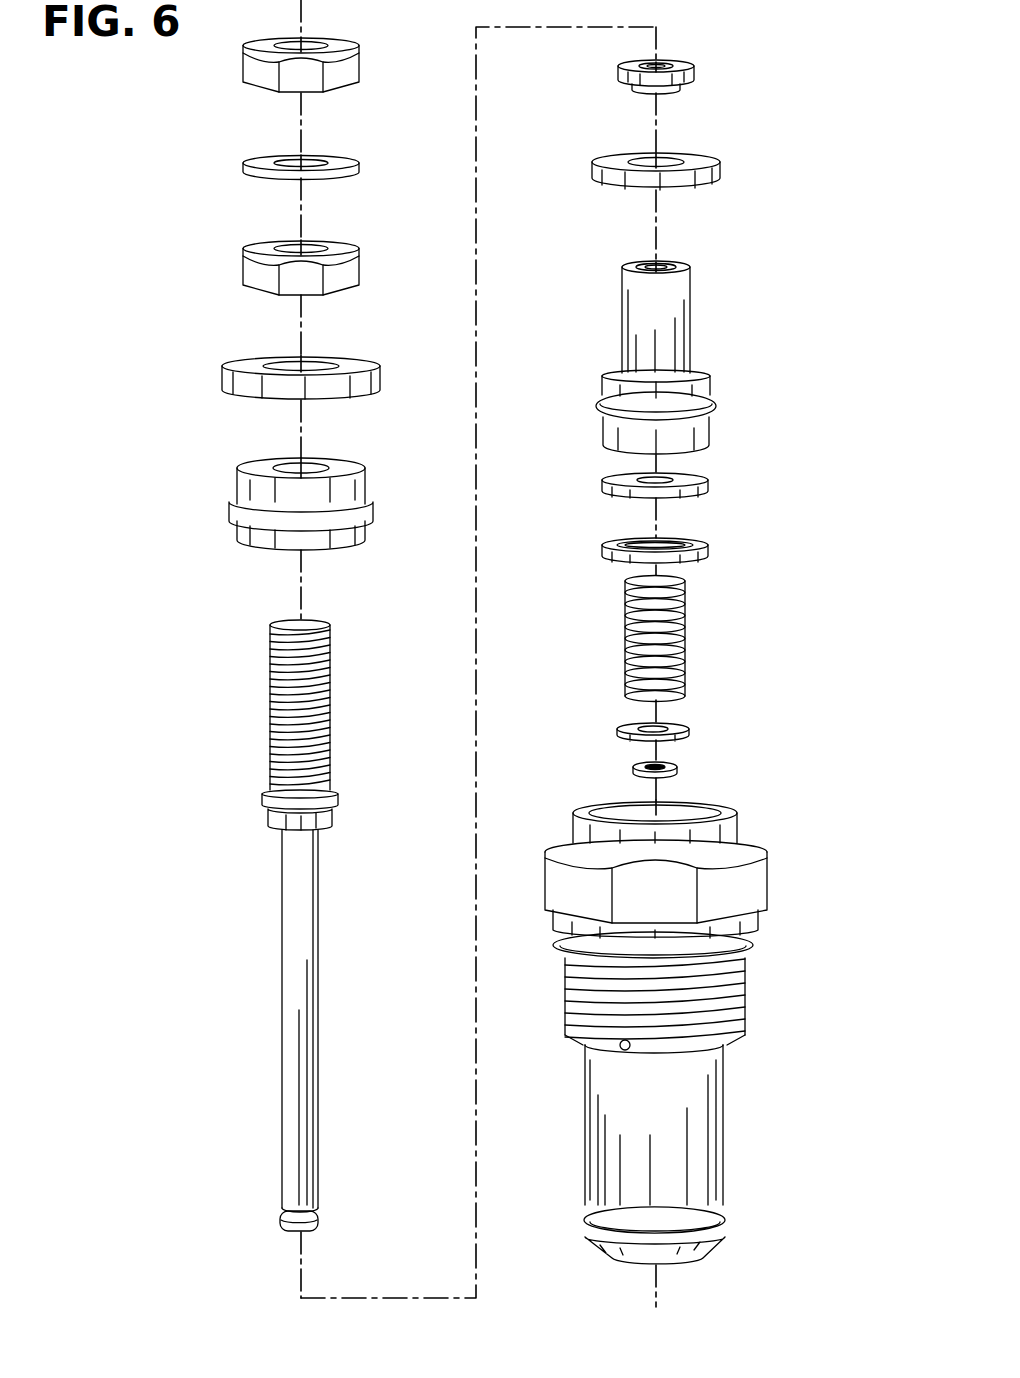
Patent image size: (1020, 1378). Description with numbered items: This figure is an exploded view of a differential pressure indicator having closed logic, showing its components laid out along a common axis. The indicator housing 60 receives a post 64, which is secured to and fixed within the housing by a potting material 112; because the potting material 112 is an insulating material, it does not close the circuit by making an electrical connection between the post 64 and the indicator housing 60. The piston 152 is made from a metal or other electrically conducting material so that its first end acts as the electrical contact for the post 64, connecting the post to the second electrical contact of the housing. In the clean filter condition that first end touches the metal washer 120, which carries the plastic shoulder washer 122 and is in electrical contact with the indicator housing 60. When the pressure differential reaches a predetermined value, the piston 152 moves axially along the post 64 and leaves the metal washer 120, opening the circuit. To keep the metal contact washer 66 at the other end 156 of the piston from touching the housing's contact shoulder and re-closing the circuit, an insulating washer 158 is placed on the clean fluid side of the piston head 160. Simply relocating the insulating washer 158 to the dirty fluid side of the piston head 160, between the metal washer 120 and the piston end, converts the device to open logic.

The indicator housing 60 is at (725, 1097).
The post 64 is at (298, 864).
The metal contact washer 66 is at (709, 482).
The potting material 112 is at (237, 486).
The metal washer 120 is at (721, 168).
The plastic shoulder washer 122 is at (695, 72).
The piston 152 is at (665, 262).
The other end of the piston 156 is at (698, 458).
The insulating washer 158 is at (709, 548).
The piston head 160 is at (700, 430).